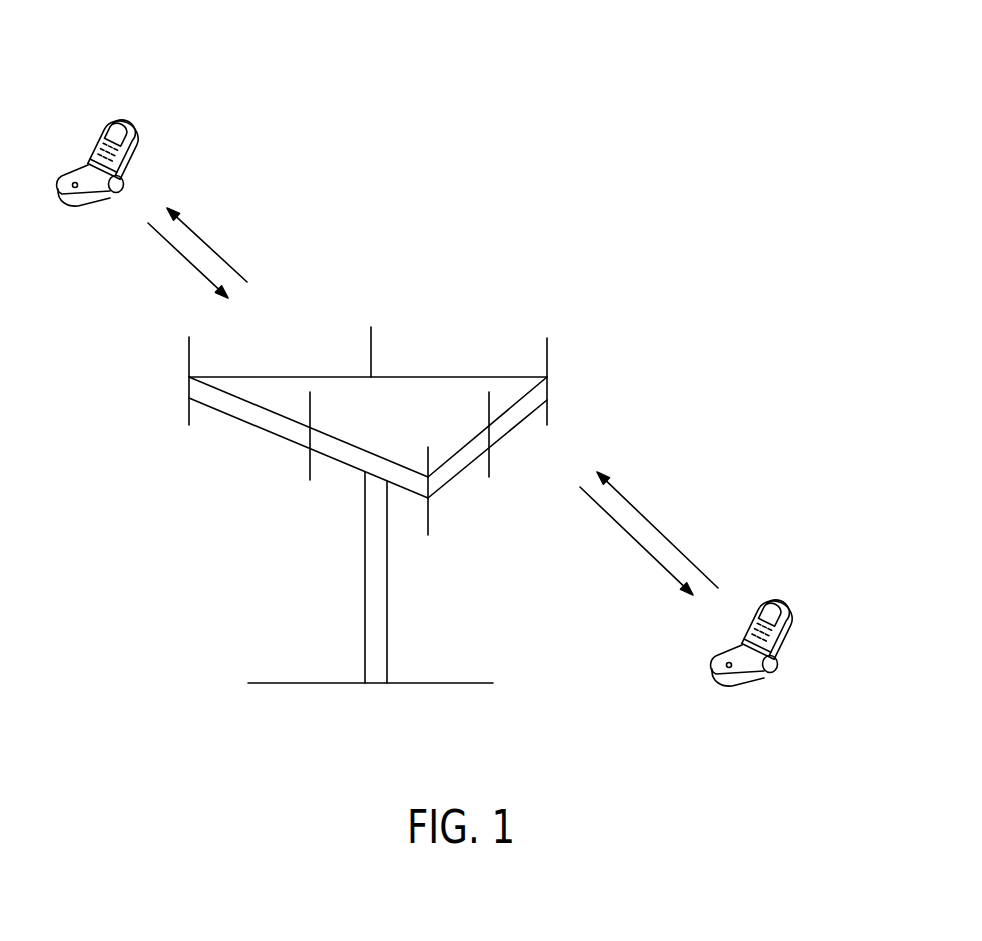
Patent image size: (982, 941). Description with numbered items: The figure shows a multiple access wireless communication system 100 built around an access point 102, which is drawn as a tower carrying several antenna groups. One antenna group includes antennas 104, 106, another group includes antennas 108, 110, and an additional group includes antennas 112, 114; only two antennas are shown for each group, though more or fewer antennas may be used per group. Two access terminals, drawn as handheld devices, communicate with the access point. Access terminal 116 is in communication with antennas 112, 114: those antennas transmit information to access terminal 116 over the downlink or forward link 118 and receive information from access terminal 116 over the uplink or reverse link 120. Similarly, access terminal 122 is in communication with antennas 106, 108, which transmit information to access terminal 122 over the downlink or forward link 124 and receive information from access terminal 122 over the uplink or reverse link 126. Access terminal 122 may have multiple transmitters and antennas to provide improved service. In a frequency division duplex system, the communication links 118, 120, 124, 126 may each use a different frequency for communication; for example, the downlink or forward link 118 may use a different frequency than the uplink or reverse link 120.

The multiple access wireless communication system 100 is at (608, 146).
The access point 102 is at (377, 685).
The antenna 104 is at (547, 340).
The antenna 106 is at (490, 467).
The antenna 108 is at (428, 527).
The antenna 110 is at (310, 470).
The antenna 112 is at (189, 357).
The antenna 114 is at (371, 331).
The access terminal 116 is at (132, 122).
The downlink or forward link 118 is at (212, 250).
The uplink or reverse link 120 is at (190, 263).
The access terminal 122 is at (785, 603).
The downlink or forward link 124 is at (637, 545).
The uplink or reverse link 126 is at (657, 528).